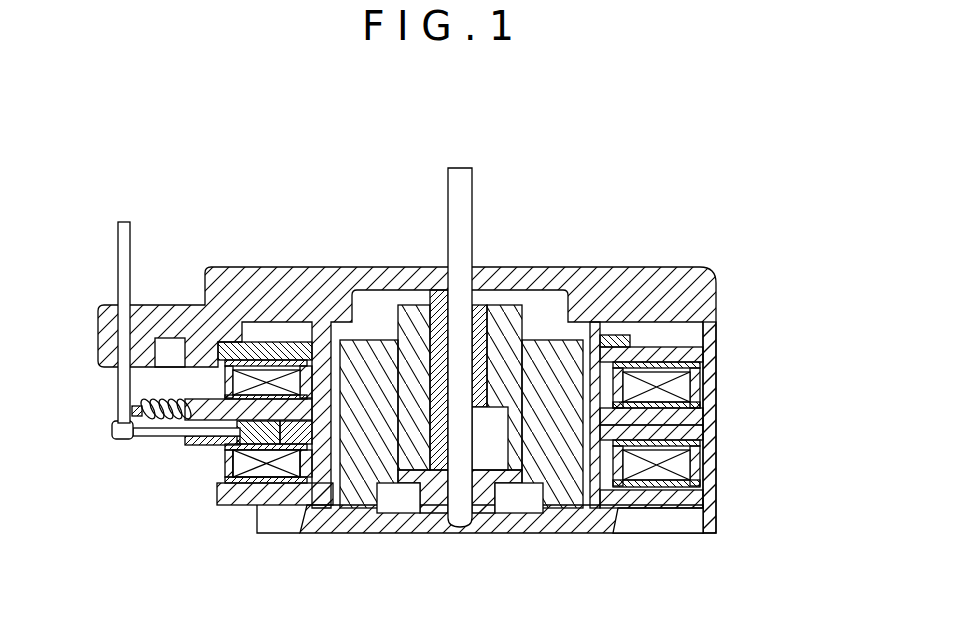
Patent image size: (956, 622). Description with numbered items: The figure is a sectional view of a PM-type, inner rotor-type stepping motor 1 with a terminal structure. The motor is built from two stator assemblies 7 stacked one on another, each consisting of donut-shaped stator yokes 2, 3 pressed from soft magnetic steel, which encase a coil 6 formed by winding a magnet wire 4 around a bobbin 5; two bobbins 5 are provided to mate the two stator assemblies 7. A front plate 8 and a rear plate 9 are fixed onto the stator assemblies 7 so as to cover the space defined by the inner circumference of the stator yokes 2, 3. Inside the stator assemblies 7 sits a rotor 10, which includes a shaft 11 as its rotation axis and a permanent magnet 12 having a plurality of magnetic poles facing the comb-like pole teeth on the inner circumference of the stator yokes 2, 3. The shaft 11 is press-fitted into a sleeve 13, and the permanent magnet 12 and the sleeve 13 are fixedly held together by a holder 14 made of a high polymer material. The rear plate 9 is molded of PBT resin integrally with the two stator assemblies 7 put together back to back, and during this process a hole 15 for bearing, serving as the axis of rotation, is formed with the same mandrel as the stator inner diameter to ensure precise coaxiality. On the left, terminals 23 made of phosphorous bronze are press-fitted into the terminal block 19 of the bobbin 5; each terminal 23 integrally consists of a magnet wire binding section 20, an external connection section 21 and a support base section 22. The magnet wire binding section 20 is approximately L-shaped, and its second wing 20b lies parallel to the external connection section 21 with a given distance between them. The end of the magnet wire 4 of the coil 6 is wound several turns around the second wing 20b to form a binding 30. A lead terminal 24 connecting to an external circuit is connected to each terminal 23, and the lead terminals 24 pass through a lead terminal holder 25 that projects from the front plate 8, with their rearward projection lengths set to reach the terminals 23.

The PM-type stepping motor 1 is at (627, 175).
The stator yoke 2 is at (665, 290).
The stator yoke 3 is at (710, 347).
The magnet wire 4 is at (165, 400).
The bobbin 5 is at (254, 520).
The coil 6 is at (262, 475).
The stator assembly 7 is at (738, 378).
The front plate 8 is at (665, 290).
The rear plate 9 is at (592, 525).
The rotor 10 is at (444, 328).
The shaft 11 is at (469, 321).
The permanent magnet 12 is at (357, 368).
The sleeve 13 is at (424, 350).
The holder 14 is at (408, 338).
The hole for bearing 15 is at (466, 517).
The terminal block 19 is at (216, 492).
The magnet wire binding section 20 is at (110, 422).
The second wing 20b is at (85, 444).
The external connection section 21 is at (157, 434).
The support base section 22 is at (215, 434).
The terminal 23 is at (217, 451).
The lead terminal 24 is at (128, 252).
The lead terminal holder 25 is at (171, 330).
The binding 30 is at (118, 396).